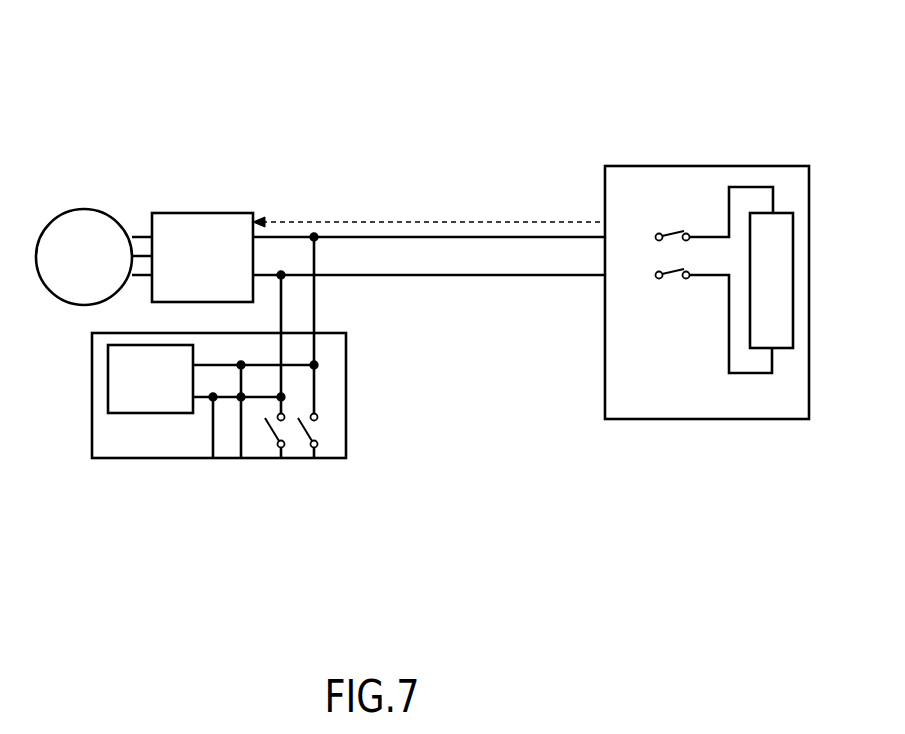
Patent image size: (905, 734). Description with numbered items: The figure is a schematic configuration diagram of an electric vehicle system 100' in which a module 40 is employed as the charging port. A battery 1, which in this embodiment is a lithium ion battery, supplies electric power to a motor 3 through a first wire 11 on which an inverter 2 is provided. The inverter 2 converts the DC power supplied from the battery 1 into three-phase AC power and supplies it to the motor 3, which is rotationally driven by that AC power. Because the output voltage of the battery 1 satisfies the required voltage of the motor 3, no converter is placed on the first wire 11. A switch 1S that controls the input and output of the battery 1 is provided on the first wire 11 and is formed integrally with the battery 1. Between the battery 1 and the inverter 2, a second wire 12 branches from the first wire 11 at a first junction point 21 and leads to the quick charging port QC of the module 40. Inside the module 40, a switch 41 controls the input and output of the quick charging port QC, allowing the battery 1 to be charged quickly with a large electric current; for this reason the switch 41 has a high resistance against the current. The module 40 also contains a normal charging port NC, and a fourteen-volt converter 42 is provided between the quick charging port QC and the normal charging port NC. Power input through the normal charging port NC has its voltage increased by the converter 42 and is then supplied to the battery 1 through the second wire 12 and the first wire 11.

The electric vehicle system 100' is at (620, 49).
The battery 1 is at (724, 166).
The switch 1S is at (666, 218).
The inverter 2 is at (217, 213).
The motor 3 is at (90, 208).
The first wire 11 is at (470, 237).
The second wire 12 is at (315, 302).
The first junction point 21 is at (314, 237).
The module 40 is at (250, 530).
The switch 41 is at (310, 450).
The converter 42 is at (140, 413).